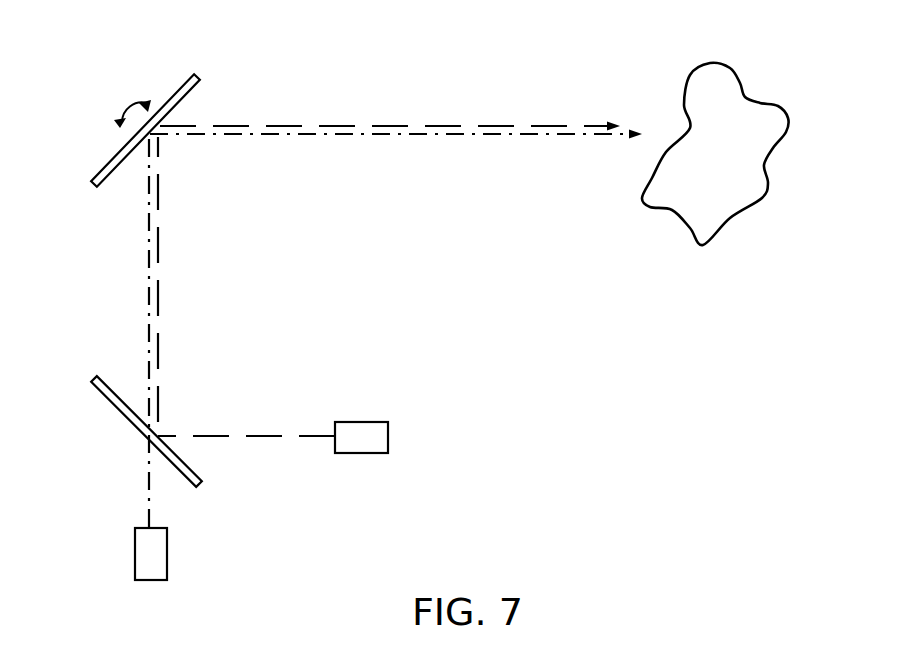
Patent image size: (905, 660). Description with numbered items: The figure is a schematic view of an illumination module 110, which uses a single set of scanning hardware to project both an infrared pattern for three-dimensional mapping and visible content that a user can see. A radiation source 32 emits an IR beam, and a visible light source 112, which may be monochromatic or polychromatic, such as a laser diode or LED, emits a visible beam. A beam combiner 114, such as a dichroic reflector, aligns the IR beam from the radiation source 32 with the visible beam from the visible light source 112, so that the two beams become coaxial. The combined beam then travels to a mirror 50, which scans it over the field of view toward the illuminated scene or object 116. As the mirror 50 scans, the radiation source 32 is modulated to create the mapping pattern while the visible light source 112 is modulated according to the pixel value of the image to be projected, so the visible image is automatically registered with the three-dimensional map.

The illumination module 110 is at (104, 70).
The mirror 50 is at (202, 79).
The object / target 116 is at (768, 177).
The beam combiner 114 is at (120, 420).
The visible light source 112 is at (388, 432).
The radiation source 32 is at (167, 557).